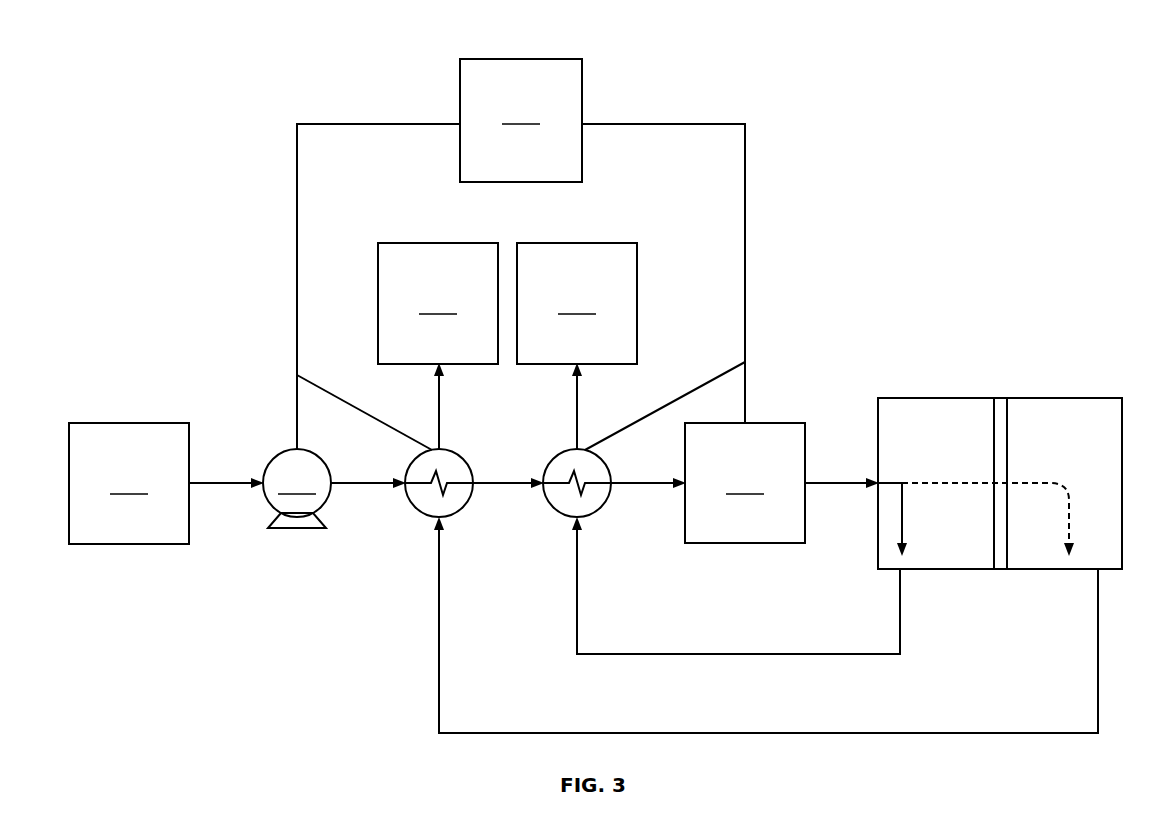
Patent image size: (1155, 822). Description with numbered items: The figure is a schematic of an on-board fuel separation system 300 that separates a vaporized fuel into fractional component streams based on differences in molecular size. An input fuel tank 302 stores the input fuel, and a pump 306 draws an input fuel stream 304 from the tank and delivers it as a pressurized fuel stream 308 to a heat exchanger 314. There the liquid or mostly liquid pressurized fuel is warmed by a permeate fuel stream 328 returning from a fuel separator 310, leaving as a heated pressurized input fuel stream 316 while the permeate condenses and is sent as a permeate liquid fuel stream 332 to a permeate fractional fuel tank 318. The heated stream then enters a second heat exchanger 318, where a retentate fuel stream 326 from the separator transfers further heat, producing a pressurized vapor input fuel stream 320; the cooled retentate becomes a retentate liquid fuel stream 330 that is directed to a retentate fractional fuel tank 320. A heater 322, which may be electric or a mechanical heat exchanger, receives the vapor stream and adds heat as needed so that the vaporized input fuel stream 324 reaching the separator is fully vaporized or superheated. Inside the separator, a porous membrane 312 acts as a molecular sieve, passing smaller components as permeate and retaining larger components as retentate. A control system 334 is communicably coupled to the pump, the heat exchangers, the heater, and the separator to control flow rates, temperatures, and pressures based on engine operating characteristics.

The on-board fuel separation system 300 is at (926, 46).
The input fuel tank 302 is at (129, 483).
The input fuel stream 304 is at (226, 487).
The pump 306 is at (297, 488).
The pressurized fuel stream 308 is at (367, 487).
The fuel separator 310 is at (1090, 386).
The membrane 312 is at (1000, 399).
The heat exchanger 314 is at (412, 462).
The heated pressurized input fuel stream 316 is at (498, 487).
The heat exchanger 318 is at (560, 454).
The pressurized vapor input fuel stream 320 is at (637, 487).
The heater 322 is at (745, 483).
The vaporized input fuel stream 324 is at (827, 487).
The retentate fuel stream 326 is at (891, 483).
The permeate fuel stream 328 is at (1040, 483).
The retentate liquid fuel stream 330 is at (580, 407).
The permeate liquid fuel stream 332 is at (442, 407).
The control system 334 is at (521, 254).